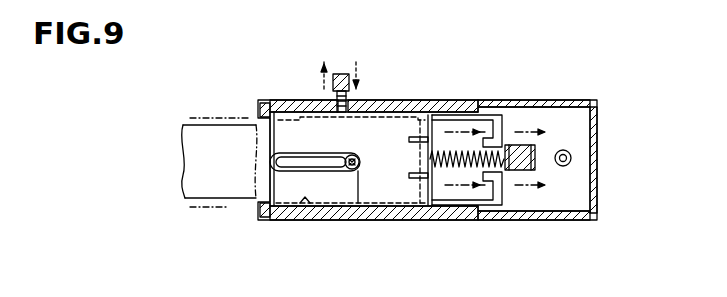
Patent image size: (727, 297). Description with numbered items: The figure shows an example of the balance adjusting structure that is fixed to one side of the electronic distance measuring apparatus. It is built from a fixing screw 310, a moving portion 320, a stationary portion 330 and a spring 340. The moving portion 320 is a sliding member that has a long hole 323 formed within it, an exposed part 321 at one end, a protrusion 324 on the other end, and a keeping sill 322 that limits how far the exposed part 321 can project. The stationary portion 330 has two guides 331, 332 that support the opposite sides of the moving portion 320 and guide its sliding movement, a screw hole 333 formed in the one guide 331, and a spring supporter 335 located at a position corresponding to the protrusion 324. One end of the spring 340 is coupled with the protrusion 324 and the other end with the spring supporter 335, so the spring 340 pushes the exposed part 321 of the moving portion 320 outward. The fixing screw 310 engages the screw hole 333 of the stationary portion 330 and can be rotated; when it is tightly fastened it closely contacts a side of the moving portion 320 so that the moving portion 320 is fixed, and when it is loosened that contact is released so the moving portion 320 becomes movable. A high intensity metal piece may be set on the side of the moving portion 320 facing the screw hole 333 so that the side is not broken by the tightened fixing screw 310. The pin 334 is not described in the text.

The fixing screw 310 is at (342, 74).
The moving portion 320 is at (340, 195).
The exposed part 321 is at (191, 169).
The keeping sill 322 is at (268, 100).
The long hole 323 is at (287, 171).
The protrusion 324 is at (430, 187).
The stationary portion 330 is at (497, 205).
The guide 331 is at (440, 100).
The guide 332 is at (302, 172).
The screw hole 333 is at (378, 99).
The pin 334 is at (352, 170).
The spring supporter 335 is at (550, 172).
The spring 340 is at (511, 174).